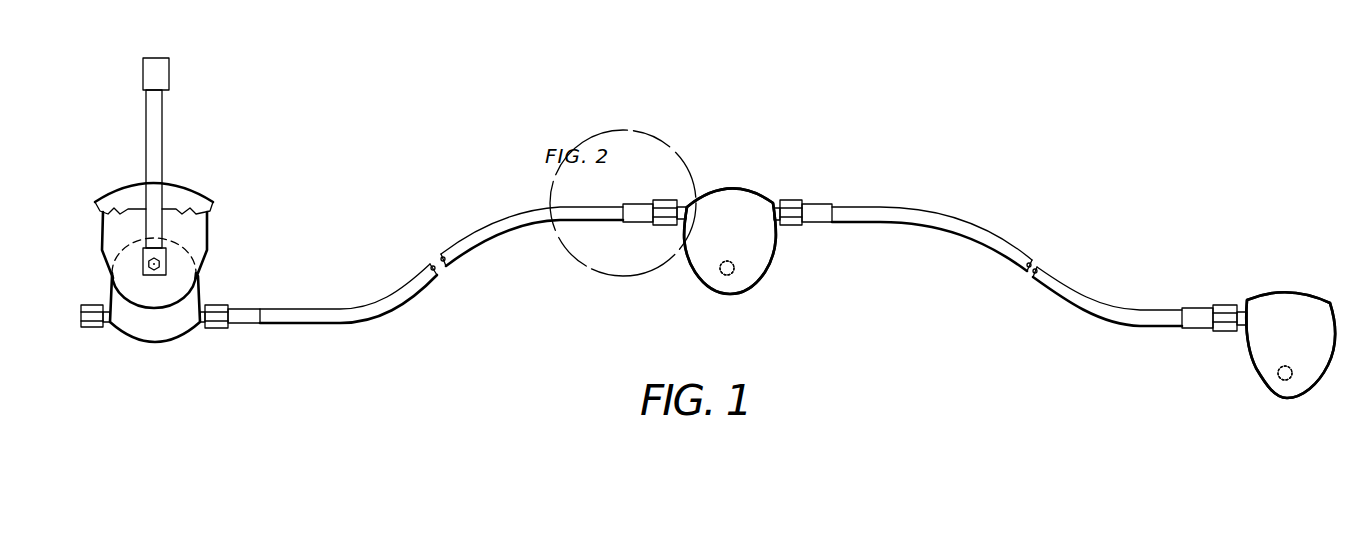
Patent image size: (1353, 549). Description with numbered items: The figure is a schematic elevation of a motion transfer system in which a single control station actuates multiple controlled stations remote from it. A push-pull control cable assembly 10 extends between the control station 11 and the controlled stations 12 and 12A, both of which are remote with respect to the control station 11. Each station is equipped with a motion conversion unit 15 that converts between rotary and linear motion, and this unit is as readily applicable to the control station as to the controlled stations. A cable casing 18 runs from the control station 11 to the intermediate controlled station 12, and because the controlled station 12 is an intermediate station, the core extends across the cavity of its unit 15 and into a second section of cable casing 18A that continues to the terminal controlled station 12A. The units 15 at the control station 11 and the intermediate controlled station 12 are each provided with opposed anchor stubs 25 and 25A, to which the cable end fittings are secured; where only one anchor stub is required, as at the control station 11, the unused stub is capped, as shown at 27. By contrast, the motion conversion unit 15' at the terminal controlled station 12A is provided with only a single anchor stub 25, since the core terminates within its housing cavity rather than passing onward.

The push-pull control cable assembly 10 is at (998, 223).
The control station 11 is at (227, 236).
The controlled station 12 is at (759, 279).
The controlled station 12A is at (1268, 396).
The motion conversion unit 15 is at (453, 260).
The motion conversion unit 15' is at (1290, 309).
The cable casing 18 is at (463, 240).
The second section of cable casing 18A is at (920, 217).
The anchor stub 25 is at (204, 306).
The anchor stub 25A is at (108, 318).
The cap 27 is at (92, 328).